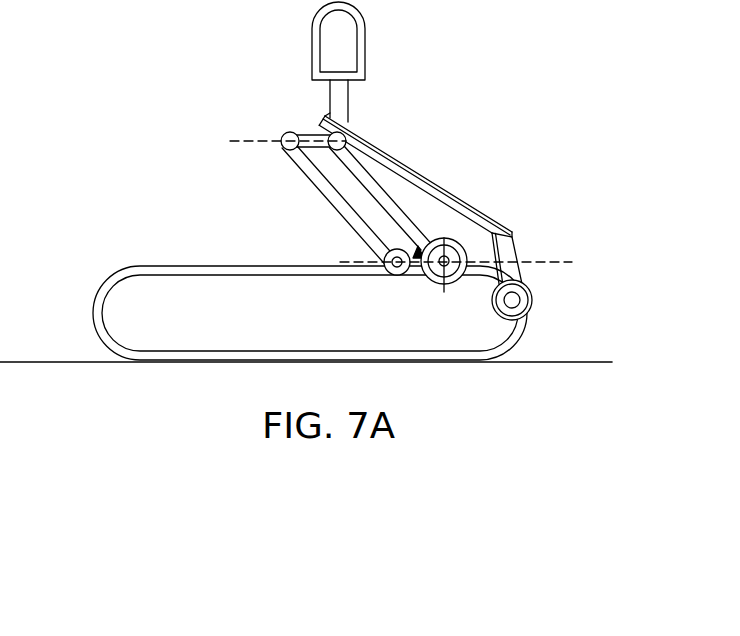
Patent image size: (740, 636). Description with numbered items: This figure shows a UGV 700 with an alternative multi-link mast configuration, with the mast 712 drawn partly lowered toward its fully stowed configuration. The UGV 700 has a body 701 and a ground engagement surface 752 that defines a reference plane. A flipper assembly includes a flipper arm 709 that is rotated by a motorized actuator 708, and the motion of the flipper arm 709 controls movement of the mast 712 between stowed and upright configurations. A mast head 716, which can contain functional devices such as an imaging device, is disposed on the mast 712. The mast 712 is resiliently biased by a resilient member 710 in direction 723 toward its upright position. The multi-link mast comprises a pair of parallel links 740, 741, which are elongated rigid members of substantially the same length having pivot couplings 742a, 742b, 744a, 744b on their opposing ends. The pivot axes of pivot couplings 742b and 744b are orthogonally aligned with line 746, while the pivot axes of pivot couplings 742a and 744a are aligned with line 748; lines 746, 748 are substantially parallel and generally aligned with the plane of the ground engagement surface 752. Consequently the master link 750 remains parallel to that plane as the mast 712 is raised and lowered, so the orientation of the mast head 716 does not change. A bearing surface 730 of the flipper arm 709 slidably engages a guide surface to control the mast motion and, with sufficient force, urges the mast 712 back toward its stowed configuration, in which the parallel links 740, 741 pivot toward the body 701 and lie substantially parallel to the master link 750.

The UGV 700 is at (138, 177).
The body 701 is at (113, 310).
The motorized actuator 708 is at (532, 302).
The flipper arm 709 is at (468, 204).
The resilient member 710 is at (467, 290).
The mast 712 is at (318, 205).
The mast head 716 is at (312, 40).
The direction 723 is at (429, 283).
The bearing surface 730 is at (369, 153).
The parallel link 740 is at (300, 170).
The parallel link 741 is at (385, 200).
The pivot coupling 742a is at (282, 136).
The pivot coupling 742b is at (391, 275).
The pivot coupling 744a is at (328, 134).
The pivot coupling 744b is at (466, 246).
The line 746 is at (565, 258).
The line 748 is at (238, 150).
The master link 750 is at (322, 124).
The ground engagement surface 752 is at (173, 363).